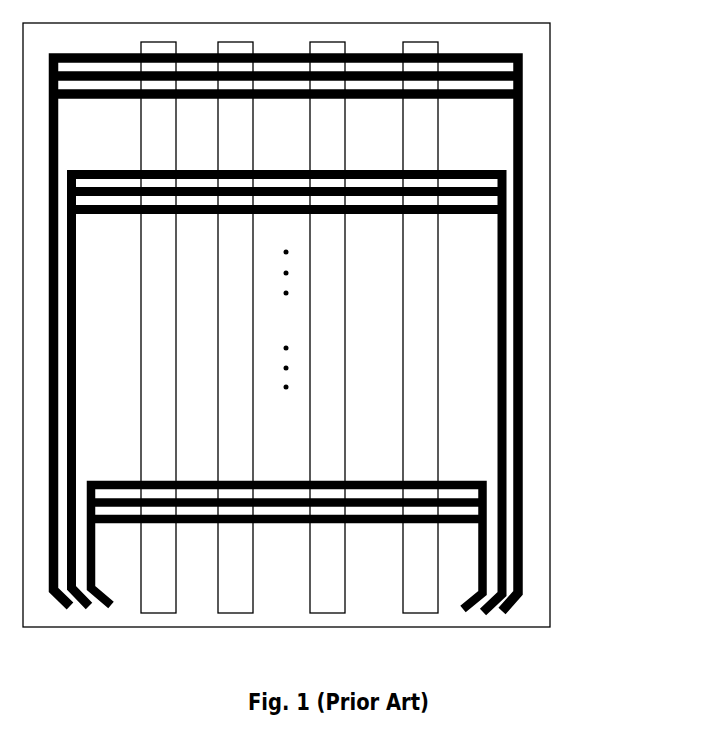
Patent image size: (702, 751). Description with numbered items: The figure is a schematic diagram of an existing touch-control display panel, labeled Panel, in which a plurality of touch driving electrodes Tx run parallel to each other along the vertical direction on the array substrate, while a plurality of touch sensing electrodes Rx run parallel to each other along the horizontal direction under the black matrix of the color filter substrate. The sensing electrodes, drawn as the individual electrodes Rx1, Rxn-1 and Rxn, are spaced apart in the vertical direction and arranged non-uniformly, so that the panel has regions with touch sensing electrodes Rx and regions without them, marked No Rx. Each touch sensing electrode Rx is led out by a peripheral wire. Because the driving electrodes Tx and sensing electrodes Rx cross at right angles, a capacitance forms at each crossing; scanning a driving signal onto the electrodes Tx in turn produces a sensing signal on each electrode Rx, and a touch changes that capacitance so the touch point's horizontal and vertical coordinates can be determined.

The touch driving electrode Tx is at (327, 614).
The touch sensing electrode Rx is at (329, 365).
The touch sensing electrode Rxn is at (507, 612).
The touch sensing electrode Rxn-1 is at (483, 612).
The touch sensing electrode Rx1 is at (460, 612).
The region without touch sensing electrode No Rx is at (455, 137).
The touch-control display panel Panel is at (285, 320).